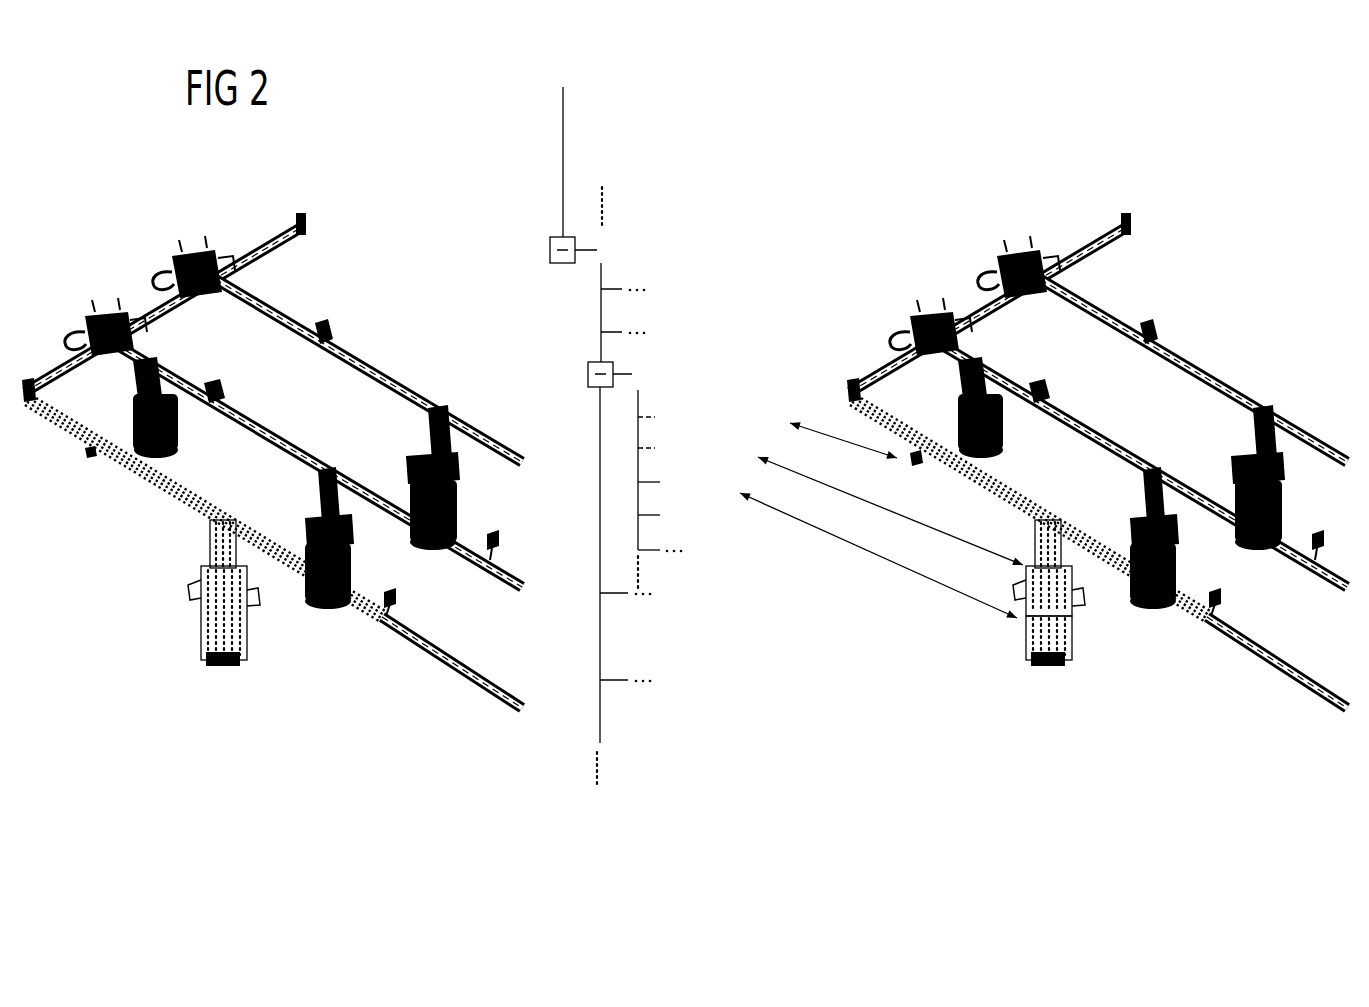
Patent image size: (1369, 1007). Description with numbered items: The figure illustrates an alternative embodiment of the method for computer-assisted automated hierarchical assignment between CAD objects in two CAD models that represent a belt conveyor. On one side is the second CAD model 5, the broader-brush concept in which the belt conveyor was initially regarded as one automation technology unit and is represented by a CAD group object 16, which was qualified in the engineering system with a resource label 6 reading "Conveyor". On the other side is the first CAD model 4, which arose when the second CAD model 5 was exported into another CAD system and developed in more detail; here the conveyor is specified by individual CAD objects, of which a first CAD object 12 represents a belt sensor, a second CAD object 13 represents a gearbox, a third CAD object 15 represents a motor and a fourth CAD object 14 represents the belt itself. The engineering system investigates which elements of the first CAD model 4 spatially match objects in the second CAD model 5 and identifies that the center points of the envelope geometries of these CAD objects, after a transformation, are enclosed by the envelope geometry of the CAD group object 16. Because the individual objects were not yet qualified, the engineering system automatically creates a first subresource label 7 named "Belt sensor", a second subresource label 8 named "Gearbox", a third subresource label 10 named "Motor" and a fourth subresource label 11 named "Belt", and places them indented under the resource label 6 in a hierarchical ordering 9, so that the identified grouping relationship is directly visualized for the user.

The first CAD model 4 is at (1097, 479).
The second CAD model 5 is at (428, 296).
The resource label 6 is at (748, 373).
The first subresource label 7 is at (790, 414).
The second subresource label 8 is at (762, 448).
The hierarchical ordering 9 is at (712, 168).
The third subresource label 10 is at (728, 486).
The fourth subresource label 11 is at (719, 520).
The first CAD object 12 is at (917, 426).
The second CAD object 13 is at (1068, 576).
The fourth CAD object 14 is at (1030, 508).
The third CAD object 15 is at (1049, 680).
The CAD group object 16 is at (140, 477).